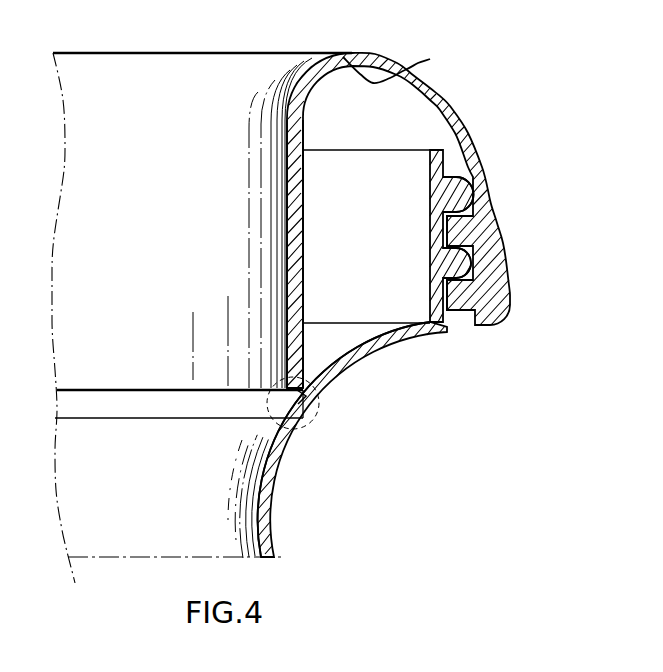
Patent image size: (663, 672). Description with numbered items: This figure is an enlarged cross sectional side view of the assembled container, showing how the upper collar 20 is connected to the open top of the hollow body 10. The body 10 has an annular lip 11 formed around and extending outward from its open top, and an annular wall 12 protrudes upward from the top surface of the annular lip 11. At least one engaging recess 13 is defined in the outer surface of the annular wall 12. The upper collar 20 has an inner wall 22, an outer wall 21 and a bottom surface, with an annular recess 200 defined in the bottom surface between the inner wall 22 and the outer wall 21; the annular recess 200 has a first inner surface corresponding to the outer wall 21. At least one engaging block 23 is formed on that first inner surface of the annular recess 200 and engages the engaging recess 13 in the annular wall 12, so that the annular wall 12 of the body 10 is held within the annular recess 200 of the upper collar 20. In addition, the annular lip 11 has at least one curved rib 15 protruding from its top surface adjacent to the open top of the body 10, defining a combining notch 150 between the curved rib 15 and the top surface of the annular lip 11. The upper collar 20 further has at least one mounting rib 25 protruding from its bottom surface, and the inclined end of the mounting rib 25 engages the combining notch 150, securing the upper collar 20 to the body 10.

The body 10 is at (273, 528).
The annular lip 11 is at (378, 349).
The annular wall 12 is at (438, 297).
The engaging recess 13 is at (452, 230).
The curved rib 15 is at (298, 400).
The upper collar 20 is at (186, 50).
The outer wall 21 is at (464, 125).
The inner wall 22 is at (303, 274).
The engaging block 23 is at (460, 233).
The mounting rib 25 is at (306, 398).
The combining notch 150 is at (300, 405).
The annular recess 200 is at (408, 68).